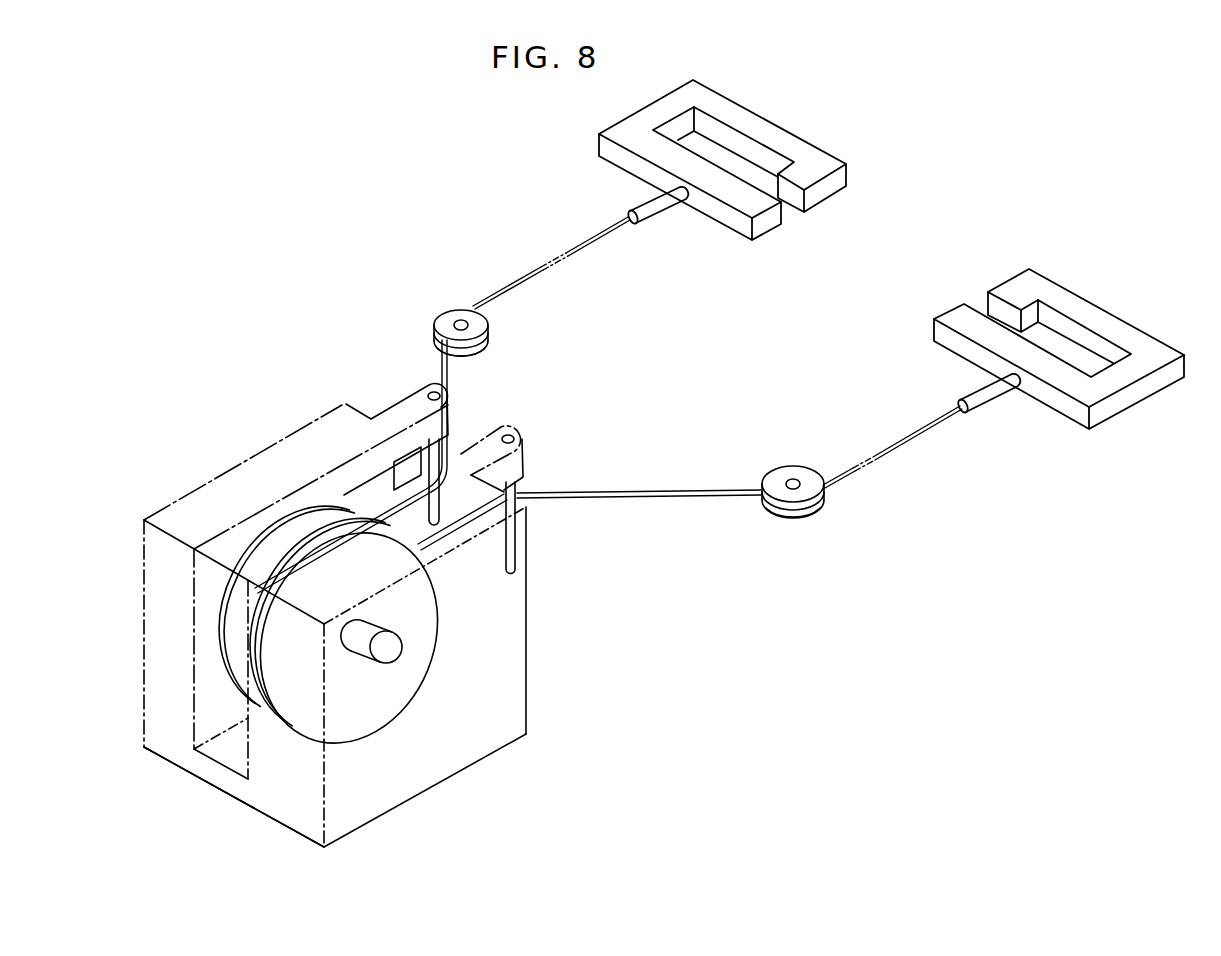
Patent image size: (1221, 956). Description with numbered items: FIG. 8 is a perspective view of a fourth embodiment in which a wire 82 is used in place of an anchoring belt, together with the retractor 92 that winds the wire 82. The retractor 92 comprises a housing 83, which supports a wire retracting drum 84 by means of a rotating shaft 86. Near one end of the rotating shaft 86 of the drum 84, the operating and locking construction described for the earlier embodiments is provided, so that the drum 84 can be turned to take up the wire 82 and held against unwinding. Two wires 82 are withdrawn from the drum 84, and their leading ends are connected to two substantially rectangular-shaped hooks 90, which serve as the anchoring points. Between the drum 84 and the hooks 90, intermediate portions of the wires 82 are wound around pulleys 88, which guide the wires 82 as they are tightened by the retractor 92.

The wire 82 is at (483, 296).
The housing 83 is at (213, 785).
The wire retracting drum 84 is at (345, 698).
The rotating shaft 86 is at (386, 648).
The pulley 88 is at (437, 318).
The hook 90 is at (773, 132).
The retractor 92 is at (242, 396).